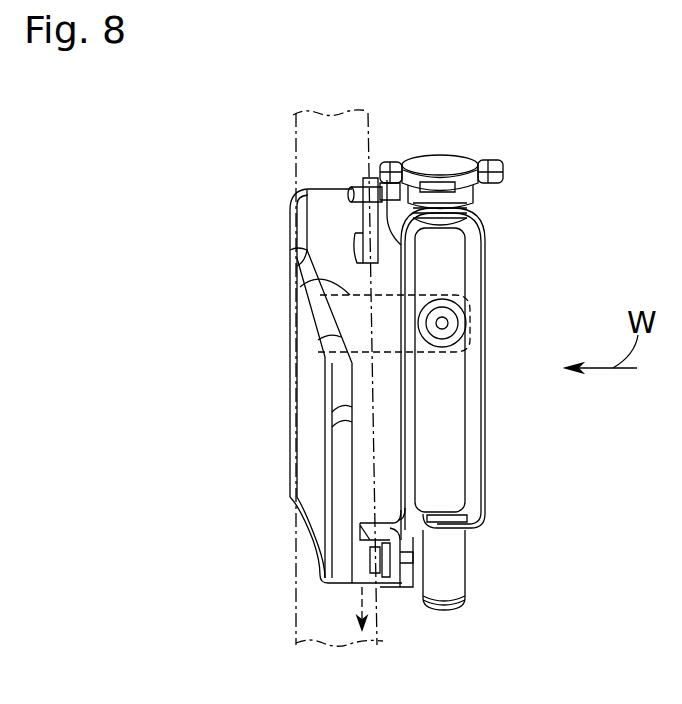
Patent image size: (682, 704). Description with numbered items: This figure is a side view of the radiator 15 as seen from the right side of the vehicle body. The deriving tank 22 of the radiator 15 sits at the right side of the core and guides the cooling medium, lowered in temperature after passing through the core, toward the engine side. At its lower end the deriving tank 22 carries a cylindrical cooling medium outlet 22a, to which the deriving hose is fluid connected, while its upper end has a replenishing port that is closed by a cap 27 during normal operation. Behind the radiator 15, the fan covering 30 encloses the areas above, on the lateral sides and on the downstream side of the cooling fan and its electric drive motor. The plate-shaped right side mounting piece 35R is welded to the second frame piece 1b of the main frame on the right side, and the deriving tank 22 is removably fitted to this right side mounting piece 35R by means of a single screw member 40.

The cap 27 is at (447, 163).
The fan covering 30 is at (293, 212).
The radiator 15 is at (486, 290).
The right side mounting piece 35R is at (300, 287).
The screw member 40 is at (450, 332).
The deriving tank 22 is at (450, 435).
The second frame piece 1b is at (293, 598).
The cooling medium outlet 22a is at (443, 608).